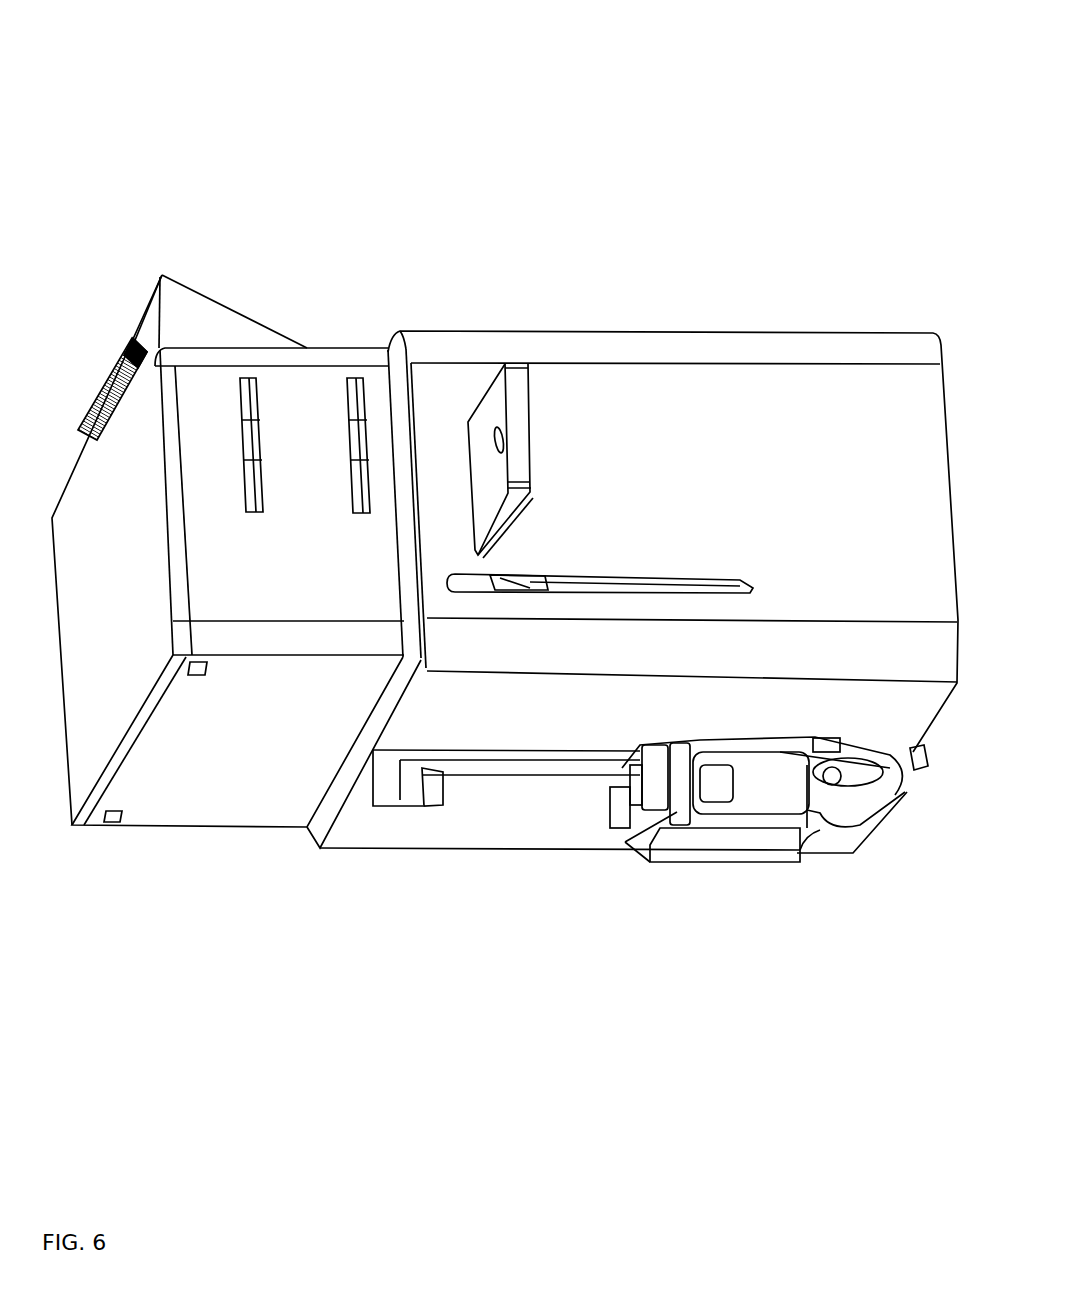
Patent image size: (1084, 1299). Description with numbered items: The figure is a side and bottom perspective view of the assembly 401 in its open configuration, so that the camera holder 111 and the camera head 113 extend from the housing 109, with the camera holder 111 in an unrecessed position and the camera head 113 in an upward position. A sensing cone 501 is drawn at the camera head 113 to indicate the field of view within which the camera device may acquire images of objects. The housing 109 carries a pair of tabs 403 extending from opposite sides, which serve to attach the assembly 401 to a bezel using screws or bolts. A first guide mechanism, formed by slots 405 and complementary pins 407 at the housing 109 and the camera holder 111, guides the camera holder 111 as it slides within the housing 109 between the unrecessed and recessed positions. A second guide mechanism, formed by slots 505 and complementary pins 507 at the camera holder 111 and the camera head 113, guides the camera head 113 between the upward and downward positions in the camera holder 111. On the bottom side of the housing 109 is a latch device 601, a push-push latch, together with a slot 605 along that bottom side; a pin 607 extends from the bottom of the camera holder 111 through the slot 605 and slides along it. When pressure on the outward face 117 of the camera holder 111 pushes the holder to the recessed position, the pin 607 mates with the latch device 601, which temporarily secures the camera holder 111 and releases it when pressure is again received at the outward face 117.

The housing 109 is at (807, 332).
The camera holder 111 is at (227, 805).
The camera head 113 is at (207, 300).
The outward face 117 is at (113, 603).
The assembly 401 is at (214, 998).
The tabs 403 is at (524, 425).
The slots 405 is at (750, 586).
The complementary pins 407 is at (483, 574).
The sensing cone 501 is at (140, 340).
The slots 505 is at (358, 498).
The complementary pins 507 is at (348, 423).
The latch device 601 is at (713, 850).
The slot 605 is at (530, 755).
The pin 607 is at (427, 803).